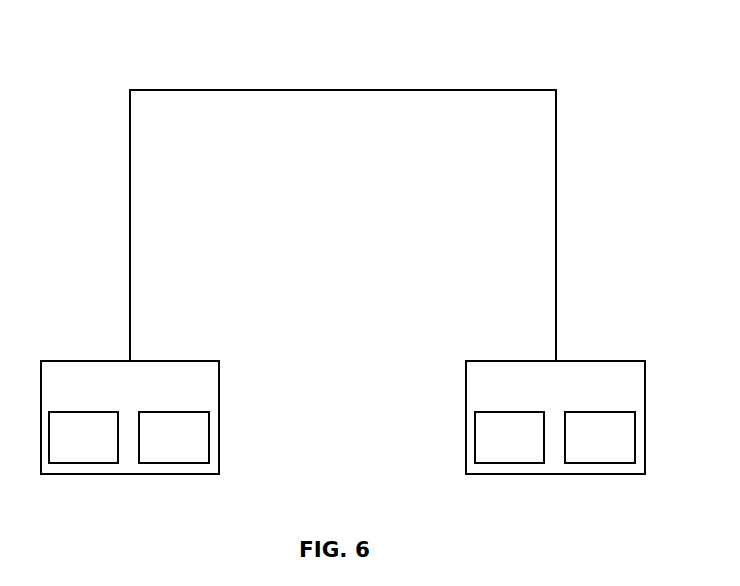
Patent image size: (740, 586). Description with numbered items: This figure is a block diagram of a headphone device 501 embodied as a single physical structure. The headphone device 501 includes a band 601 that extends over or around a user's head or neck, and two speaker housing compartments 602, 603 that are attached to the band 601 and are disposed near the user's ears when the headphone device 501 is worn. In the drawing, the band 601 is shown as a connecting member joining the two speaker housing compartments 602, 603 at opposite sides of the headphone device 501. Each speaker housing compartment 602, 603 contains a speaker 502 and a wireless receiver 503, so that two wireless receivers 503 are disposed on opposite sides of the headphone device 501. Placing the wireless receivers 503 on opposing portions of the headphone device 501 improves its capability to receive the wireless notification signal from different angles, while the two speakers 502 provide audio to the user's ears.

The headphone device 501 is at (321, 26).
The band 601 is at (129, 203).
The speaker housing compartment 602 is at (110, 394).
The speaker housing compartment 603 is at (536, 394).
The speaker 502 is at (66, 448).
The wireless receiver 503 is at (156, 448).